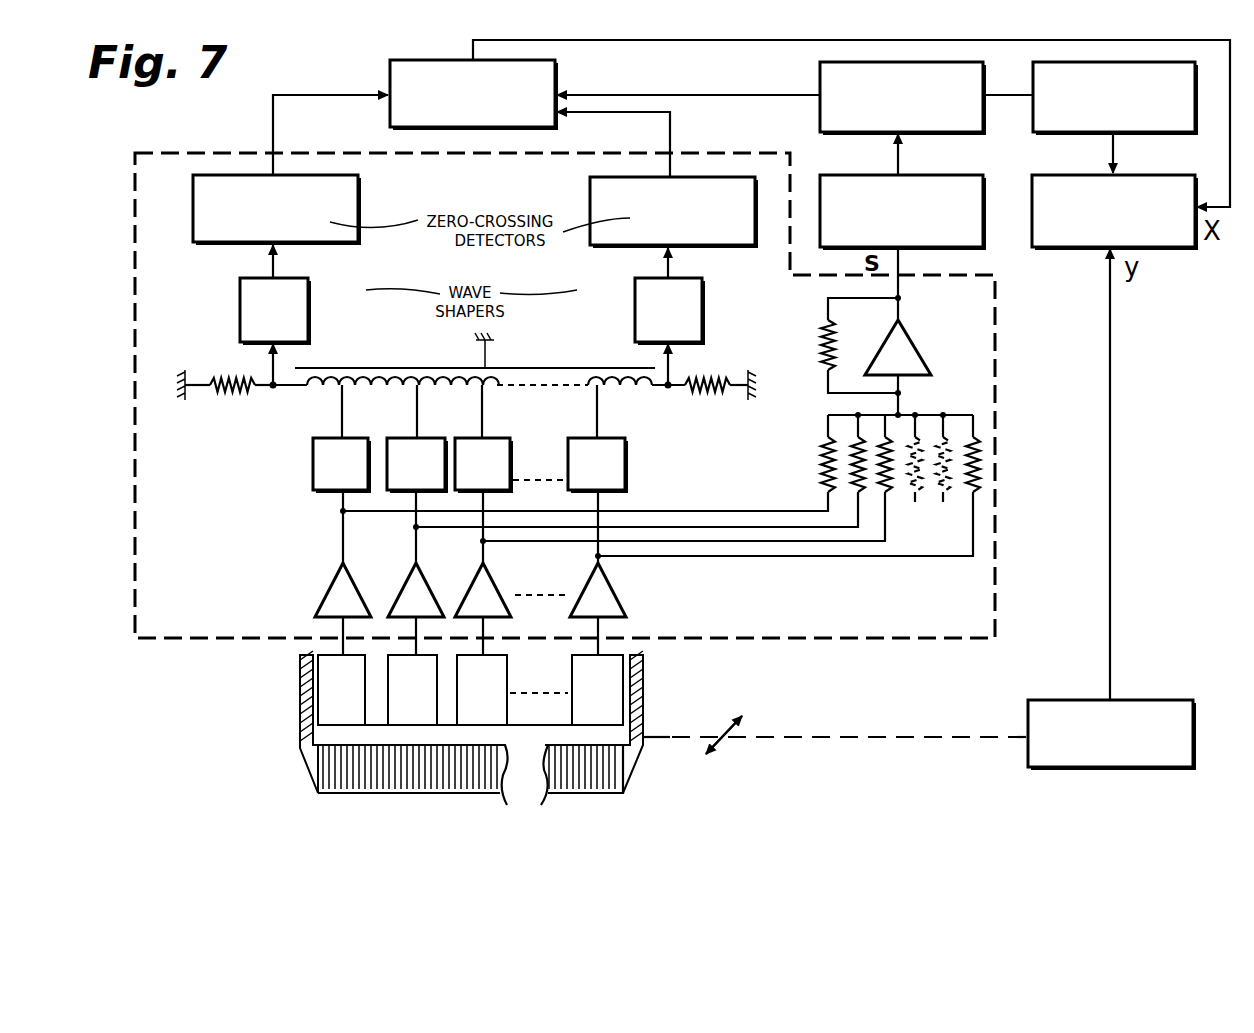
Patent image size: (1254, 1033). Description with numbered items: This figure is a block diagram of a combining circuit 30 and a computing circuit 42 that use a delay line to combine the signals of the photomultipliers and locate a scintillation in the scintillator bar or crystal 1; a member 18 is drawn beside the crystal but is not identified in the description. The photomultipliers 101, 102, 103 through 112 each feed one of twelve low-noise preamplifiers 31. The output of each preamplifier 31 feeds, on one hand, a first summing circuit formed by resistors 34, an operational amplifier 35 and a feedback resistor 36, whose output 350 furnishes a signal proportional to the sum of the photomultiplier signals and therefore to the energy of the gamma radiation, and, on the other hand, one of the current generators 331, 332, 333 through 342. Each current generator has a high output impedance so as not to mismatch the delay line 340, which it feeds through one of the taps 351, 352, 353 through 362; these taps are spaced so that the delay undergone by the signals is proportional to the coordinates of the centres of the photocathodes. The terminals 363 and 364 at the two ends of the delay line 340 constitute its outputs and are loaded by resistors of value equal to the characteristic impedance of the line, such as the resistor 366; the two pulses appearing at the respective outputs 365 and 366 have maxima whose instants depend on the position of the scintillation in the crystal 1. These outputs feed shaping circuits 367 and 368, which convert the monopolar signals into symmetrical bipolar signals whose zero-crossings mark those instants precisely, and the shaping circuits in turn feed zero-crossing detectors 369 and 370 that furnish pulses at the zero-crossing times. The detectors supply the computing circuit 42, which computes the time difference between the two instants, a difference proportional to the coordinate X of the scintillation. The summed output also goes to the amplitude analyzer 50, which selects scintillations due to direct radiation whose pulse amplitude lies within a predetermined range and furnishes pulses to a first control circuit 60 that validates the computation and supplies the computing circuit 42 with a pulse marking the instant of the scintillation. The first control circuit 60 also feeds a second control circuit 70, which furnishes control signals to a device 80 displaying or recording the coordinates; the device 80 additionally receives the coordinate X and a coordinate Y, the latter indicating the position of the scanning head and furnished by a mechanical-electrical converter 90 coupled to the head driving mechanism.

The scintillator bar 1 is at (454, 722).
The acoustic absorber block 18 is at (499, 775).
The combining circuit 30 is at (135, 224).
The preamplifiers 31 is at (322, 602).
The resistors 34 is at (972, 494).
The operational amplifier 35 is at (913, 350).
The feedback resistor 36 is at (822, 347).
The computing circuit 42 is at (390, 82).
The amplitude analyzer 50 is at (960, 175).
The first control circuit 60 is at (820, 76).
The second control circuit 70 is at (1033, 75).
The display device 80 is at (1170, 175).
The mechanical-electrical converter 90 is at (1069, 700).
The photomultiplier 101 is at (341, 690).
The photomultiplier 102 is at (412, 690).
The photomultiplier 103 is at (482, 690).
The photomultiplier 112 is at (597, 690).
The current generator 331 is at (313, 467).
The current generator 332 is at (387, 462).
The current generator 333 is at (510, 470).
The current generator 342 is at (626, 470).
The delay line 340 is at (580, 372).
The output of the summing circuit 350 is at (900, 288).
The tap 351 is at (340, 424).
The tap 352 is at (419, 422).
The tap 353 is at (483, 422).
The tap 362 is at (598, 422).
The terminal 363 is at (668, 390).
The terminal 364 is at (273, 388).
The output of the delay line 365 is at (712, 385).
The load resistor 366 is at (230, 380).
The shaping circuit 367 is at (634, 316).
The shaping circuit 368 is at (340, 300).
The zero-crossing detector 369 is at (590, 216).
The zero-crossing detector 370 is at (360, 216).